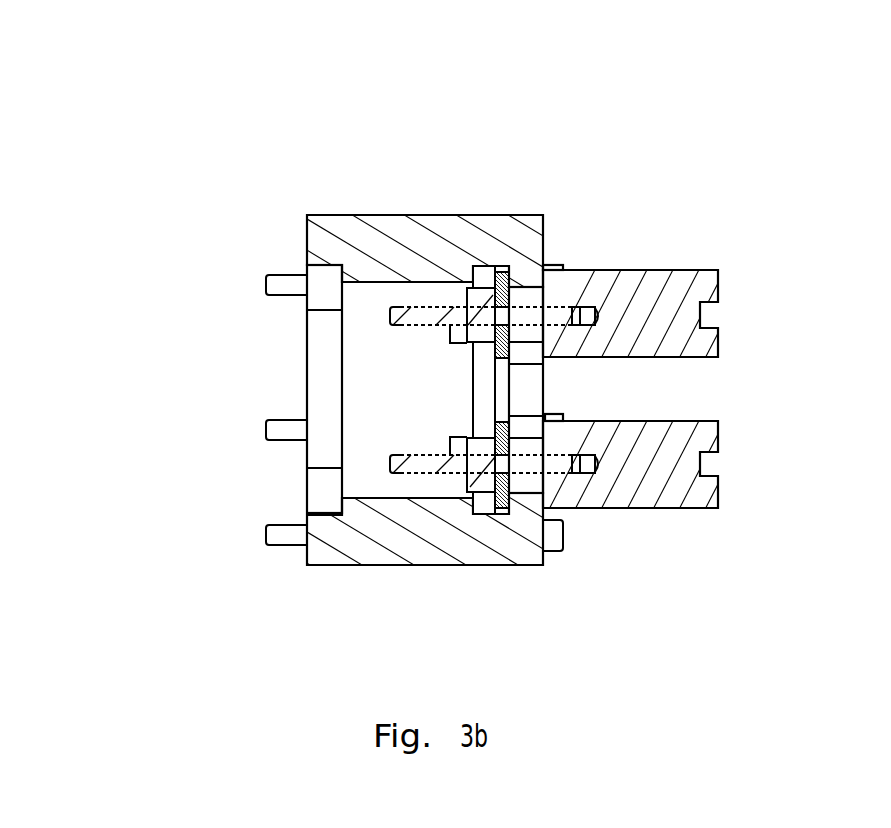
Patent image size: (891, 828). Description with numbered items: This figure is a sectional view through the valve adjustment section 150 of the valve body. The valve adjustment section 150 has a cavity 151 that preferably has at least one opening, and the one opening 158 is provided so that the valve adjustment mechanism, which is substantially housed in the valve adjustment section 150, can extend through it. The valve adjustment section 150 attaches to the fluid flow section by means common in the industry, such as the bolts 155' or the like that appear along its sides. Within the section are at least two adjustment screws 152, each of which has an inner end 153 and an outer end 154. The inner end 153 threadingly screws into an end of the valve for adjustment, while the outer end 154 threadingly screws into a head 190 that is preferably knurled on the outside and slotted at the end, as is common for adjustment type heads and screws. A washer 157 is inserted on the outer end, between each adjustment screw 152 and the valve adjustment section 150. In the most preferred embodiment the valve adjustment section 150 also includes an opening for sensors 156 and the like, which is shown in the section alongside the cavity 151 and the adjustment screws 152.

The valve adjustment section 150 is at (483, 347).
The cavity 151 is at (407, 339).
The adjustment screw 152 is at (537, 259).
The inner end 153 is at (449, 256).
The outer end 154 is at (627, 318).
The bolts 155' is at (450, 458).
The opening for sensors 156 is at (535, 388).
The washer 157 is at (576, 277).
The opening 158 is at (236, 389).
The head 190 is at (670, 349).